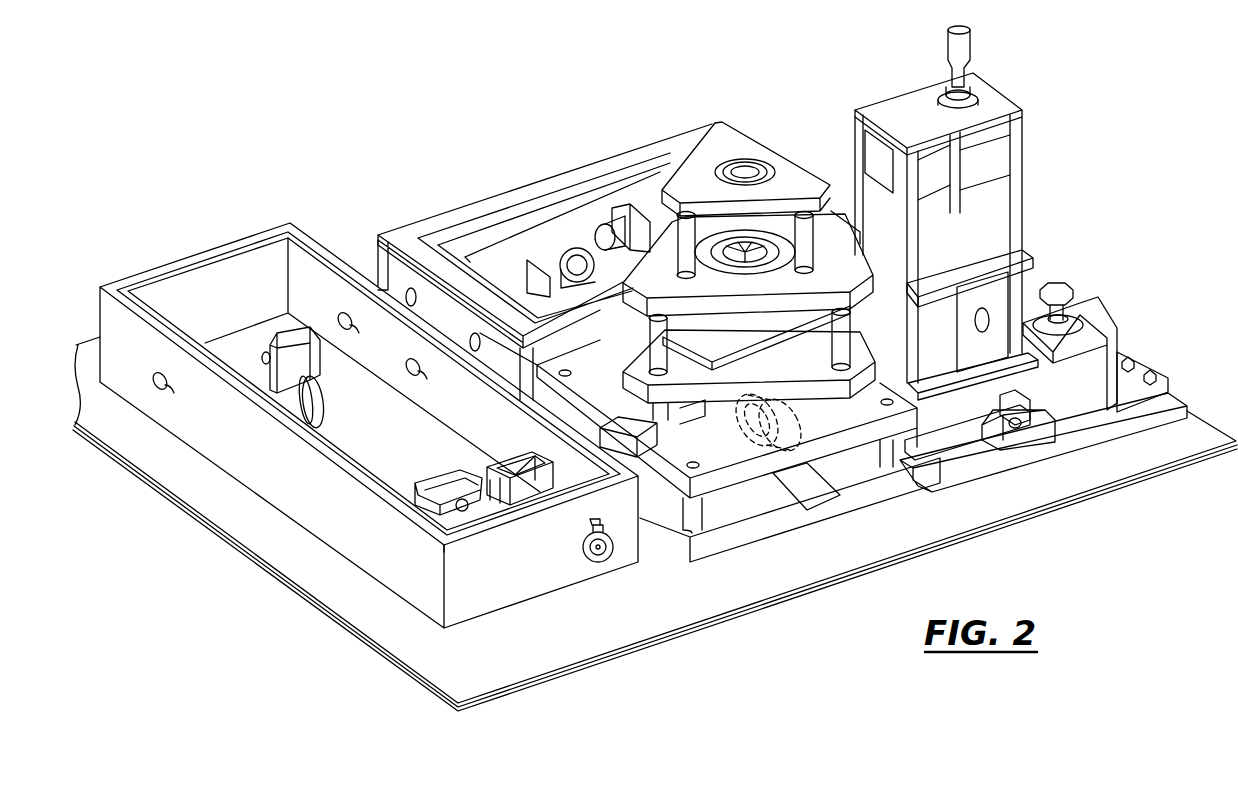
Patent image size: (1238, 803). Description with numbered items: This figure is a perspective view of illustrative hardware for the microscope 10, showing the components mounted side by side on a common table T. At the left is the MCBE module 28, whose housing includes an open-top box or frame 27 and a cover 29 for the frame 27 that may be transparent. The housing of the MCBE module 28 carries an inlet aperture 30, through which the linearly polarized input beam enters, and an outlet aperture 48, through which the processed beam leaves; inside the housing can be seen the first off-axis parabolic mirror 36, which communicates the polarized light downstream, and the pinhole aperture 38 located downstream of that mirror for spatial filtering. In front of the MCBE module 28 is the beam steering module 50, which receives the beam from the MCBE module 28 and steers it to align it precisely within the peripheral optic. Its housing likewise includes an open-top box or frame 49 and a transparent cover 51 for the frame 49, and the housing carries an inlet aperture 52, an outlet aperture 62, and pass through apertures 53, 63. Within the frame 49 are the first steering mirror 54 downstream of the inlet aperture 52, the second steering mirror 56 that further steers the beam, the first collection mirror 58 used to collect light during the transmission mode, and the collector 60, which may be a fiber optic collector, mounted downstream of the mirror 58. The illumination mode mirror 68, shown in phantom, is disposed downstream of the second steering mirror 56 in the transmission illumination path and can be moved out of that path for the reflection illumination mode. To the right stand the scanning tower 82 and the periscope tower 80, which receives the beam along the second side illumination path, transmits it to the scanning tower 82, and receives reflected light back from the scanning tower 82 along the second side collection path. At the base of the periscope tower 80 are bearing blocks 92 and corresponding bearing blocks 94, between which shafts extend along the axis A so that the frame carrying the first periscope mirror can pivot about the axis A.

The microscope 10 is at (740, 78).
The open-top box or frame 27 is at (375, 250).
The MCBE module 28 is at (440, 182).
The cover 29 is at (535, 210).
The inlet aperture 30 is at (410, 290).
The first off-axis parabolic mirror 36 is at (612, 222).
The pinhole aperture 38 is at (575, 248).
The outlet aperture 48 is at (473, 341).
The open-top box or frame 49 is at (444, 545).
The beam steering module 50 is at (195, 236).
The cover 51 is at (168, 274).
The inlet aperture 52 is at (424, 377).
The pass through aperture 53 is at (174, 390).
The first steering mirror 54 is at (290, 330).
The second steering mirror 56 is at (430, 470).
The first collection mirror 58 is at (532, 478).
The collector 60 is at (608, 535).
The outlet aperture 62 is at (562, 455).
The pass through aperture 63 is at (356, 331).
The illumination mode mirror 68 is at (800, 413).
The periscope tower 80 is at (1049, 92).
The scanning tower 82 is at (786, 124).
The bearing block 92 is at (995, 400).
The bearing block 94 is at (995, 432).
The axis A is at (1053, 426).
The table T is at (1198, 438).